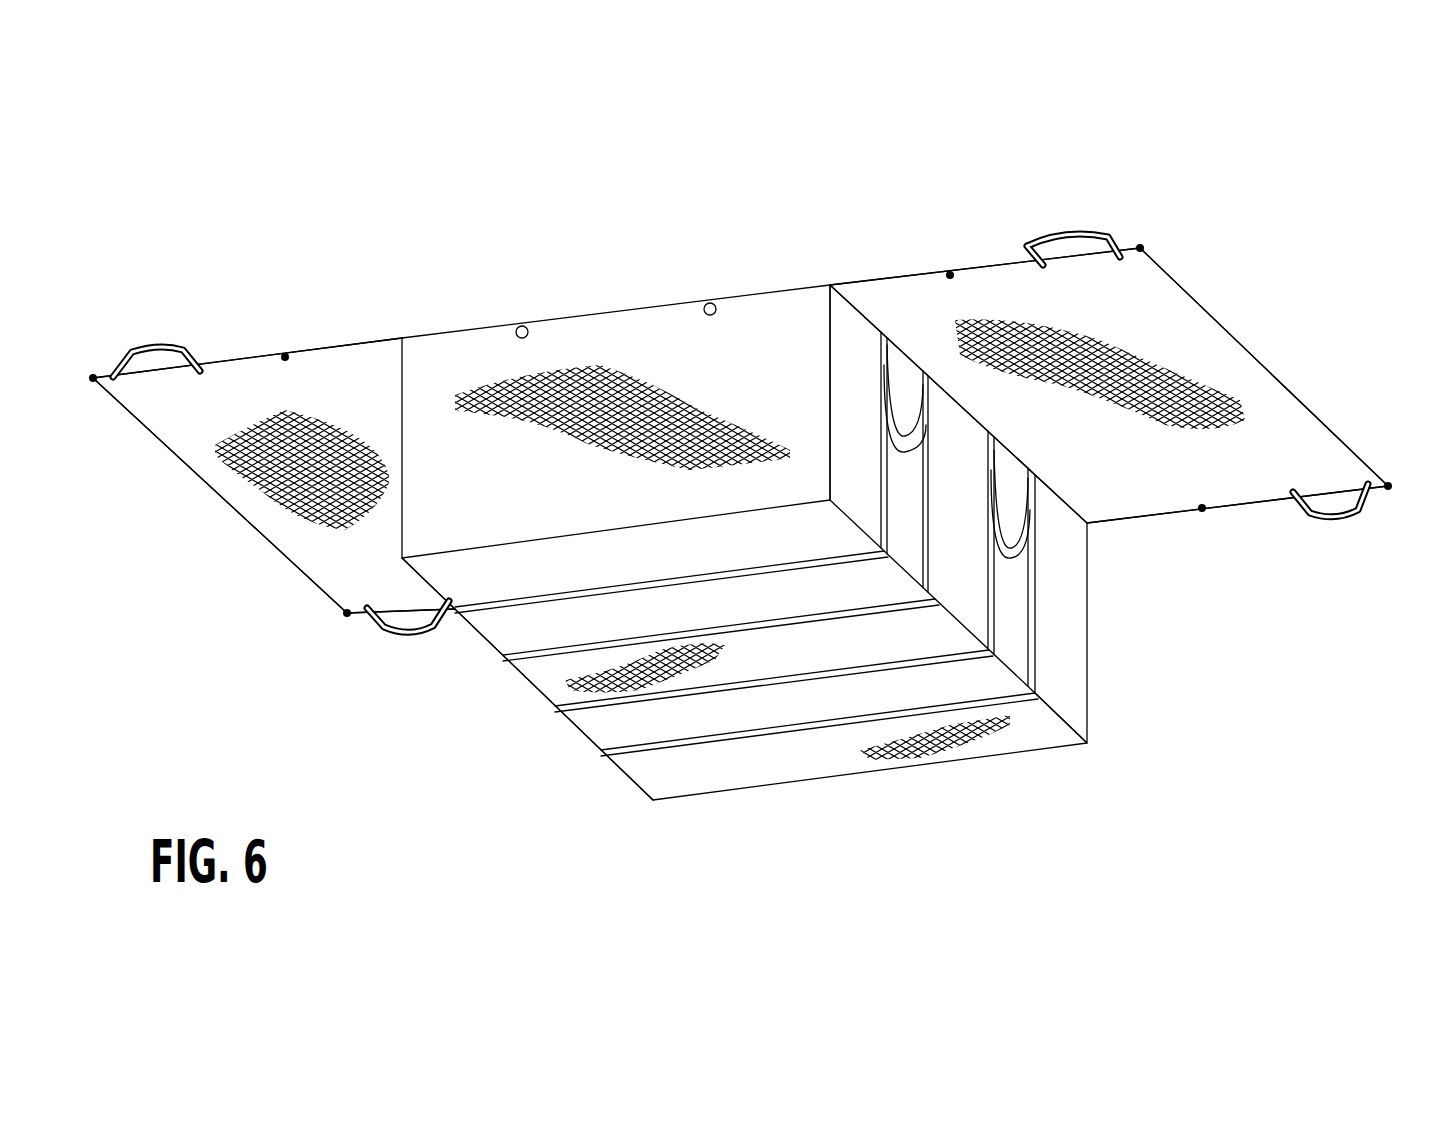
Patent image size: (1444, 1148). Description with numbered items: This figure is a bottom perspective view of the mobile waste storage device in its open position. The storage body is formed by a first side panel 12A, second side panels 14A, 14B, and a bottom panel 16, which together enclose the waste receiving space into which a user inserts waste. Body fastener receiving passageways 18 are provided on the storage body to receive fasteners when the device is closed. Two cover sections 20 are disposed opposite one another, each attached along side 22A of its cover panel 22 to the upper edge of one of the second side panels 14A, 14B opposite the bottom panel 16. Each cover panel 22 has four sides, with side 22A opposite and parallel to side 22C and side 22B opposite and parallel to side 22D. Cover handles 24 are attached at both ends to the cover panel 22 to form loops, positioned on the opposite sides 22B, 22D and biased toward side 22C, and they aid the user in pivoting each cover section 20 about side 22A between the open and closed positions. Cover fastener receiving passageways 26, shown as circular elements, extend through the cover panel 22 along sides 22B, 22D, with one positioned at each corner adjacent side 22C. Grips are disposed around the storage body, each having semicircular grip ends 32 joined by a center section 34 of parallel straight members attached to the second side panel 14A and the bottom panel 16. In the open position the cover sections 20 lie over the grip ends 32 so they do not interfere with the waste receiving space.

The first side panel 12A is at (420, 527).
The second side panel 14A is at (525, 715).
The second side panel 14B is at (1085, 693).
The bottom panel 16 is at (802, 664).
The body fastener receiving passageways 18 is at (710, 302).
The cover section 20 is at (210, 570).
The cover panel 22 is at (170, 432).
The side 22A is at (1060, 495).
The side 22B is at (353, 340).
The side 22C is at (193, 485).
The side 22D is at (1130, 522).
The cover handles 24 is at (150, 348).
The cover fastener receiving passageways 26 is at (93, 378).
The grip ends 32 is at (918, 440).
The center section 34 is at (480, 610).